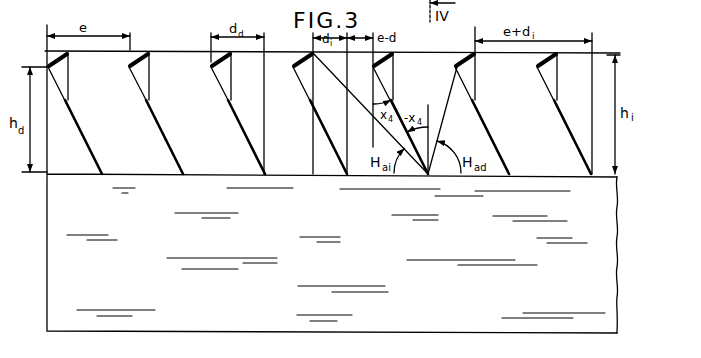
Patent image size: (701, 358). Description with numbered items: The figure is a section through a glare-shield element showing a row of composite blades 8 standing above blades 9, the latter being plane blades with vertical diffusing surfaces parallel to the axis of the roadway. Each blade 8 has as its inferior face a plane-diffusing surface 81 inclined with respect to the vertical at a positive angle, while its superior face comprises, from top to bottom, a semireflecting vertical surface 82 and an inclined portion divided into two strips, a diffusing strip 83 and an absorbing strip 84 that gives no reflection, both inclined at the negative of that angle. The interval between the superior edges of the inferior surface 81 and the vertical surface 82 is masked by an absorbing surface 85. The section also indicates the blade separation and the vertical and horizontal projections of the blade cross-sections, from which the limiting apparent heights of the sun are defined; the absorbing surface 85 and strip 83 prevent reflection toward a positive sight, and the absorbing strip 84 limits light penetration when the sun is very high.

The blade 8 is at (470, 96).
The blade 9 is at (60, 273).
The plane-diffusing surface 81 is at (142, 94).
The semireflecting vertical surface 82 is at (149, 71).
The diffusing strip 83 is at (153, 114).
The absorbing strip 84 is at (171, 149).
The absorbing surface 85 is at (141, 57).